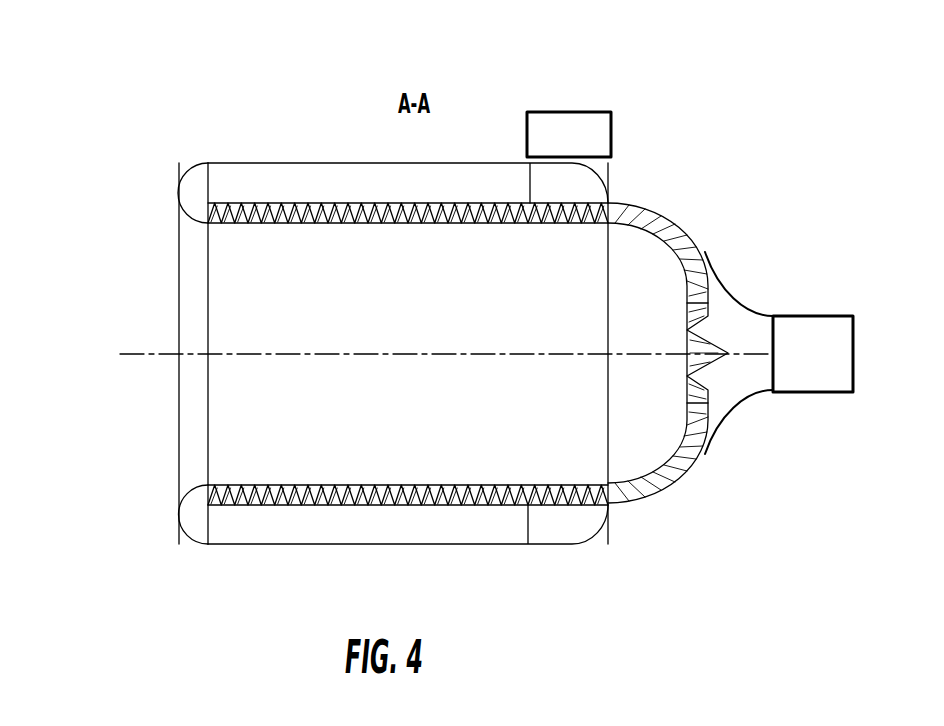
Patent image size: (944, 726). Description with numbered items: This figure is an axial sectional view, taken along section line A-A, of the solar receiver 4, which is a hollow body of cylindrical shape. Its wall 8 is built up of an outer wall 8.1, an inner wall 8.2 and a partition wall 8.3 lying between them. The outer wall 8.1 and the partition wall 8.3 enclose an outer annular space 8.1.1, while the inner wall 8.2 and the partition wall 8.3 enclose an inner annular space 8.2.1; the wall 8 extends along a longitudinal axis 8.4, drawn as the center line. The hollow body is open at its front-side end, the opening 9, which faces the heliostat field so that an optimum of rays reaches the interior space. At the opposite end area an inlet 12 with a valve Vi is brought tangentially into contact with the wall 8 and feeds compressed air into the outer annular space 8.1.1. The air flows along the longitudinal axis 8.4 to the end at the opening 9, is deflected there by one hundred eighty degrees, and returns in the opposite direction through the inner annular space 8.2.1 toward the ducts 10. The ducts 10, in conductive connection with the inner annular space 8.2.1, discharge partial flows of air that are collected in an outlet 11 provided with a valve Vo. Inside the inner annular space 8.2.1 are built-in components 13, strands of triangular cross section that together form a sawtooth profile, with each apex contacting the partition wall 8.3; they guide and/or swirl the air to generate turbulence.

The solar receiver 4 is at (97, 155).
The wall 8 is at (478, 525).
The outer wall 8.1 is at (335, 545).
The outer annular space 8.1.1 is at (440, 185).
The inner wall 8.2 is at (252, 226).
The inner annular space 8.2.1 is at (443, 486).
The partition wall 8.3 is at (271, 506).
The longitudinal axis 8.4 is at (133, 355).
The opening 9 is at (178, 300).
The ducts 10 is at (693, 277).
The outlet 11 is at (775, 373).
The inlet 12 is at (590, 157).
The built-in components 13 is at (315, 203).